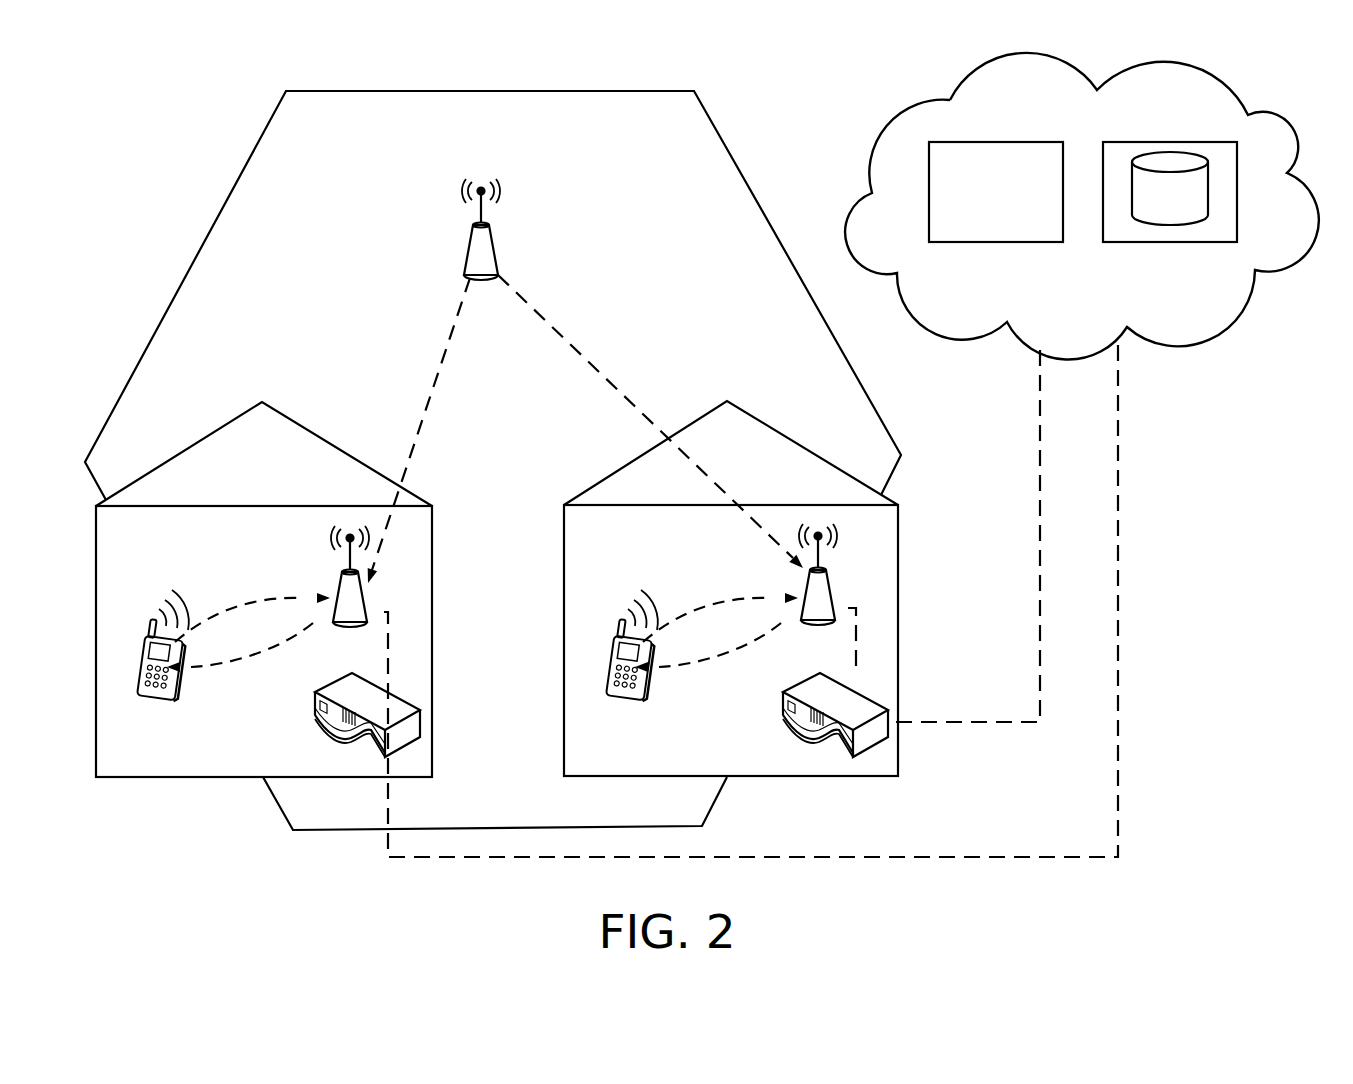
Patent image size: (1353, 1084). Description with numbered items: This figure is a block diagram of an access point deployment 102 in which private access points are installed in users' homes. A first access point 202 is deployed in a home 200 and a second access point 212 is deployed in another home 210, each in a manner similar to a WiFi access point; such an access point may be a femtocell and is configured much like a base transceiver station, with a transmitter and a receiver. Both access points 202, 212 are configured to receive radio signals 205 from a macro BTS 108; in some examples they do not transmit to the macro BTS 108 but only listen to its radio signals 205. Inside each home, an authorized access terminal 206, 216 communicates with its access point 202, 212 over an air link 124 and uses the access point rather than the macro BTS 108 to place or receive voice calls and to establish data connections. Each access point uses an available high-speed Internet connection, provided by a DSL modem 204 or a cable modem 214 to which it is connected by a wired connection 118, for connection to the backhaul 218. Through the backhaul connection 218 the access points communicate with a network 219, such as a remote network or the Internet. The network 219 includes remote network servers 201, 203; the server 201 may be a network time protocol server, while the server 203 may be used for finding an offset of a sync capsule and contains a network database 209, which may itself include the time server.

The communication system 102 is at (239, 157).
The macro BTS 108 is at (467, 257).
The radio signals 205 is at (437, 378).
The network 219 is at (877, 124).
The server 201 is at (974, 198).
The server 203 is at (1237, 162).
The database 209 is at (1147, 209).
The backhaul connection 218 is at (1039, 468).
The home 200 is at (213, 778).
The home 210 is at (680, 778).
The access point 202 is at (343, 625).
The access point 212 is at (810, 627).
The access terminal 206 is at (145, 695).
The access terminal 216 is at (615, 695).
The DSL modem 204 is at (330, 727).
The cable modem 214 is at (793, 723).
The air link 124 is at (288, 597).
The wired connection 118 is at (388, 670).